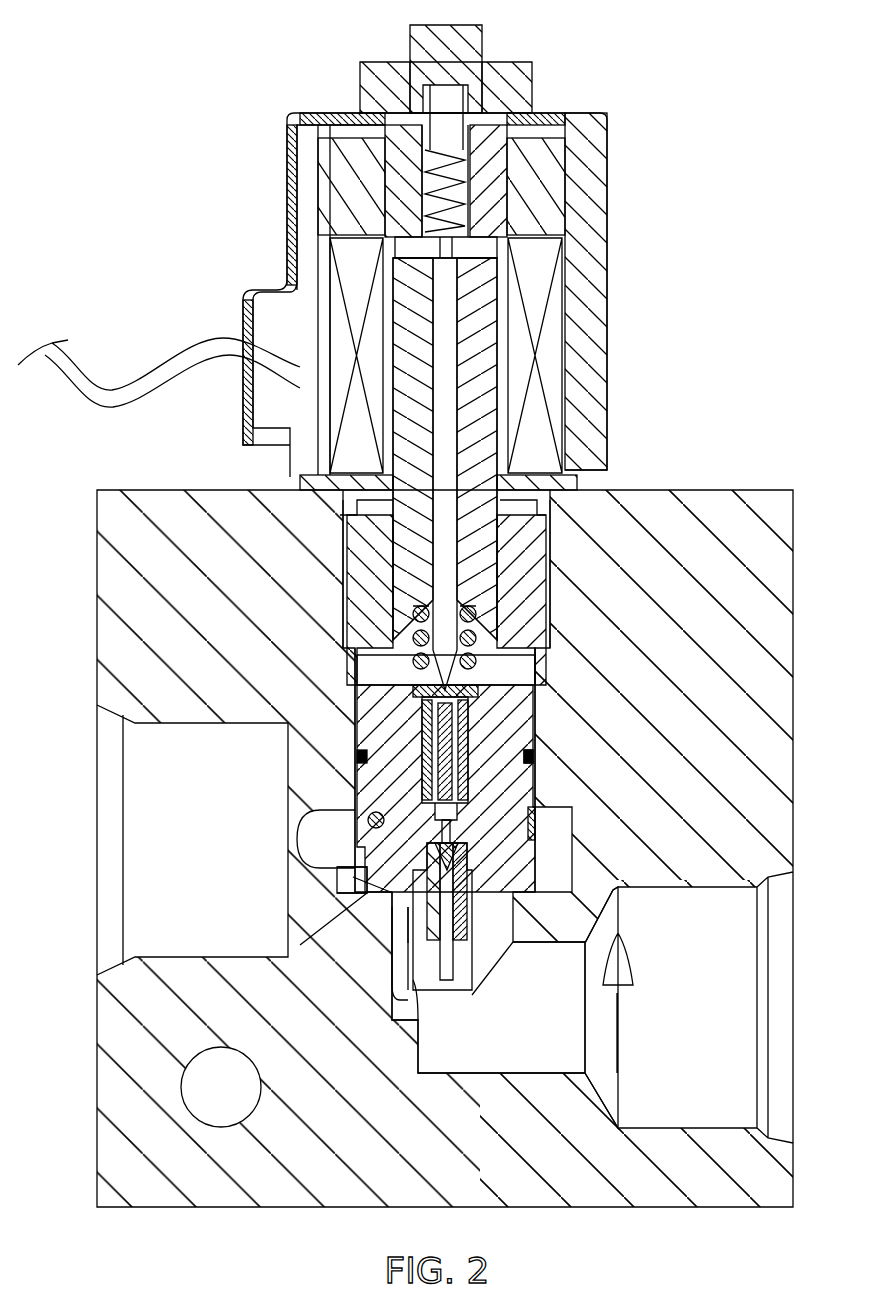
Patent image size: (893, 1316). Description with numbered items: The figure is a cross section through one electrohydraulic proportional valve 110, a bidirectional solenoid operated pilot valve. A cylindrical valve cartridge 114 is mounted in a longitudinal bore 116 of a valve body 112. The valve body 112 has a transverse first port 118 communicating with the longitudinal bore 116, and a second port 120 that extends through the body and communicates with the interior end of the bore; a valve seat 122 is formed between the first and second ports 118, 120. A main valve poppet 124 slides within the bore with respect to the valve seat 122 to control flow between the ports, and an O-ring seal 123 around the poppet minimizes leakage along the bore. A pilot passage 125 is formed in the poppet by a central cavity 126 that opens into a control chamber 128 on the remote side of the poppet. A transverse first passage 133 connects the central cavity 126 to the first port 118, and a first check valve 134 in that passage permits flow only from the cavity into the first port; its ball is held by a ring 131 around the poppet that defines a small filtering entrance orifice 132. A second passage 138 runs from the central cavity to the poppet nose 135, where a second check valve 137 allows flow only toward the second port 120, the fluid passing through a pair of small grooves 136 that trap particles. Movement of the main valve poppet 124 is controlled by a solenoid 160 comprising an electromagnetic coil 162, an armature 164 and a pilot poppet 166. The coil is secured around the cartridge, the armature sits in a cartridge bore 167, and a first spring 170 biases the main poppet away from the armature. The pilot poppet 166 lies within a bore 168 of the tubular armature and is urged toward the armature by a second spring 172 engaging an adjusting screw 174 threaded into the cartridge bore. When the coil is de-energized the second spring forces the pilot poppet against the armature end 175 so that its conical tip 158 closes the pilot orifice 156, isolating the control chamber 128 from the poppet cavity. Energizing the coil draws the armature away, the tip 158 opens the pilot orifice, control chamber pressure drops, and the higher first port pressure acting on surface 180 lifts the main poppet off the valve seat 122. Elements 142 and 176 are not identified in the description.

The electrohydraulic proportional valve 110 is at (658, 248).
The valve body 112 is at (717, 505).
The valve cartridge 114 is at (527, 563).
The longitudinal bore 116 is at (355, 672).
The first port 118 is at (165, 858).
The second port 120 is at (510, 1026).
The valve seat 122 is at (472, 917).
The O-ring seal 123 is at (533, 757).
The main valve poppet 124 is at (512, 790).
The pilot passage 125 is at (423, 767).
The central cavity 126 is at (463, 723).
The control chamber 128 is at (538, 667).
The ring 131 is at (535, 815).
The entrance orifice 132 is at (353, 852).
The first passage 133 is at (430, 800).
The first check valve 134 is at (367, 818).
The poppet nose 135 is at (453, 947).
The small grooves 136 is at (446, 873).
The second check valve 137 is at (413, 941).
The second passage 138 is at (367, 870).
The seal 142 is at (363, 732).
The pilot orifice 156 is at (415, 710).
The conical tip 158 is at (538, 643).
The solenoid 160 is at (340, 212).
The electromagnetic coil 162 is at (340, 330).
The armature 164 is at (482, 462).
The pilot poppet 166 is at (443, 308).
The cartridge bore 167 is at (323, 475).
The armature bore 168 is at (447, 410).
The first spring 170 is at (400, 600).
The second spring 172 is at (465, 173).
The adjusting screw 174 is at (445, 78).
The armature end 175 is at (412, 243).
The spring seat 176 is at (460, 245).
The surface 180 is at (352, 923).